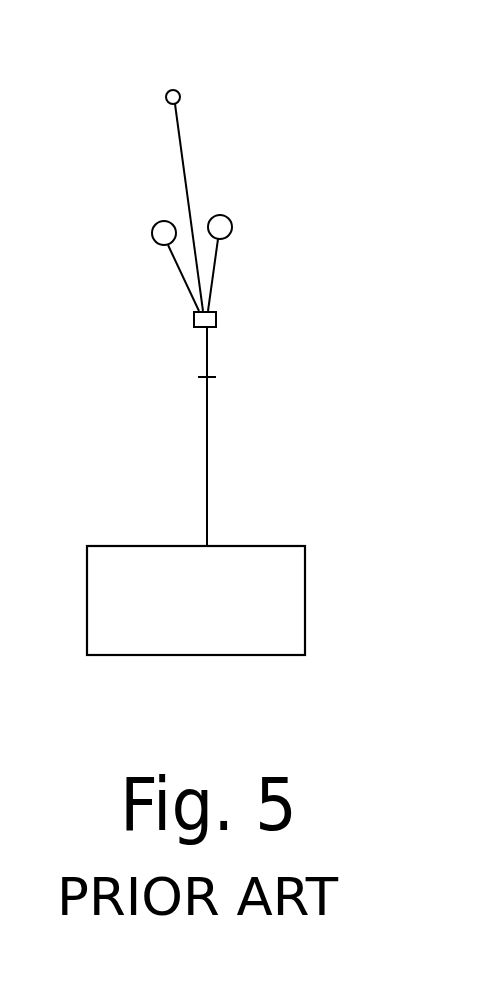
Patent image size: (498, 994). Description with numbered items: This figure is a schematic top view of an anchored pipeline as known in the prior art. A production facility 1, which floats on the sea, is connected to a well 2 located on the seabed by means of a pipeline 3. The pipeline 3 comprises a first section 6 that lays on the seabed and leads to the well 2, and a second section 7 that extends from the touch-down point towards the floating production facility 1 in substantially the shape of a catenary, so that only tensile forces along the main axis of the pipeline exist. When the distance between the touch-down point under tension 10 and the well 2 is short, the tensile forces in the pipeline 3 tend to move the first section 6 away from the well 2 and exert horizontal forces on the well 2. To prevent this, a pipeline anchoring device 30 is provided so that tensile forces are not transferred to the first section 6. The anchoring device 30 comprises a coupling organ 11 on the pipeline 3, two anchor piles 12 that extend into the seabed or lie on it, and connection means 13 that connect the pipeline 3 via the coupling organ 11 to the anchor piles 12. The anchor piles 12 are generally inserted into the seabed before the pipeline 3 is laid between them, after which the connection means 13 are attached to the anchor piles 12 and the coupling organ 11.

The production facility 1 is at (283, 594).
The well 2 is at (160, 88).
The pipeline 3 is at (210, 353).
The first section 6 is at (176, 174).
The second section 7 is at (210, 475).
The touch-down point under tension 10 is at (200, 369).
The coupling organ 11 is at (219, 314).
The anchor pile 12 is at (149, 231).
The connection means 13 is at (172, 270).
The pipeline anchoring device 30 is at (347, 255).